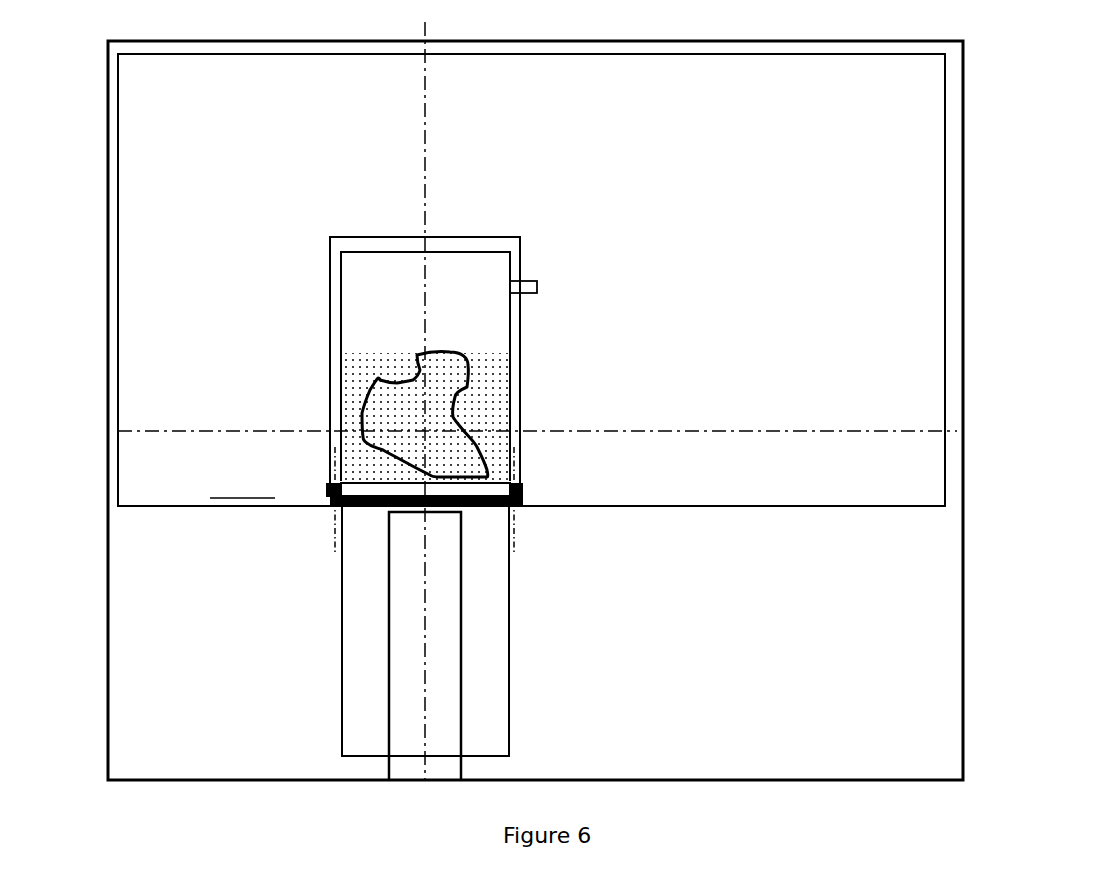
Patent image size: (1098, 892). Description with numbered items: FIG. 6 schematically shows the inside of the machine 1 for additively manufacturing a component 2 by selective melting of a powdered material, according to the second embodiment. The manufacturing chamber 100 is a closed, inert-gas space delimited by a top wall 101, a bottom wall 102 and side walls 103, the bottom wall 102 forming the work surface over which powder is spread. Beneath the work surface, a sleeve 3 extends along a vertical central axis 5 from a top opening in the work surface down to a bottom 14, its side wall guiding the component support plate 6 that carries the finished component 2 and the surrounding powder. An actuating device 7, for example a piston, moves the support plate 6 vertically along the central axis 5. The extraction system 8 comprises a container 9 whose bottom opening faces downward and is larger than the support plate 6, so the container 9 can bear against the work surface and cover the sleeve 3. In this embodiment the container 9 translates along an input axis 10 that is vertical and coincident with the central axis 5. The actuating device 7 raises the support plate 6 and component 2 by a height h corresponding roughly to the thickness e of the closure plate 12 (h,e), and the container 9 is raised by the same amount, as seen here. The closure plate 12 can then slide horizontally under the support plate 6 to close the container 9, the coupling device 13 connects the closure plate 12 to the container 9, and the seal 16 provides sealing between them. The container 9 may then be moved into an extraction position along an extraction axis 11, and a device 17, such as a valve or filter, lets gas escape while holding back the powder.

The machine 1 is at (967, 232).
The manufacturing chamber 100 is at (741, 131).
The top wall 101 is at (262, 58).
The bottom wall 102 is at (182, 503).
The side walls 103 is at (124, 224).
The central axis 5 is at (370, 401).
The input axis 10 is at (423, 142).
The extraction axis 11 is at (891, 429).
The extraction system 8 is at (445, 315).
The container 9 is at (501, 236).
The device 17 is at (541, 292).
The component 2 is at (420, 350).
The component support plate 6 is at (511, 479).
The seal 16 is at (524, 492).
The closure plate 12 is at (345, 509).
The height h and thickness e h,e is at (240, 530).
The removable coupling device 13 is at (519, 533).
The sleeve 3 is at (513, 672).
The actuating device 7 is at (476, 712).
The bottom 14 is at (356, 752).